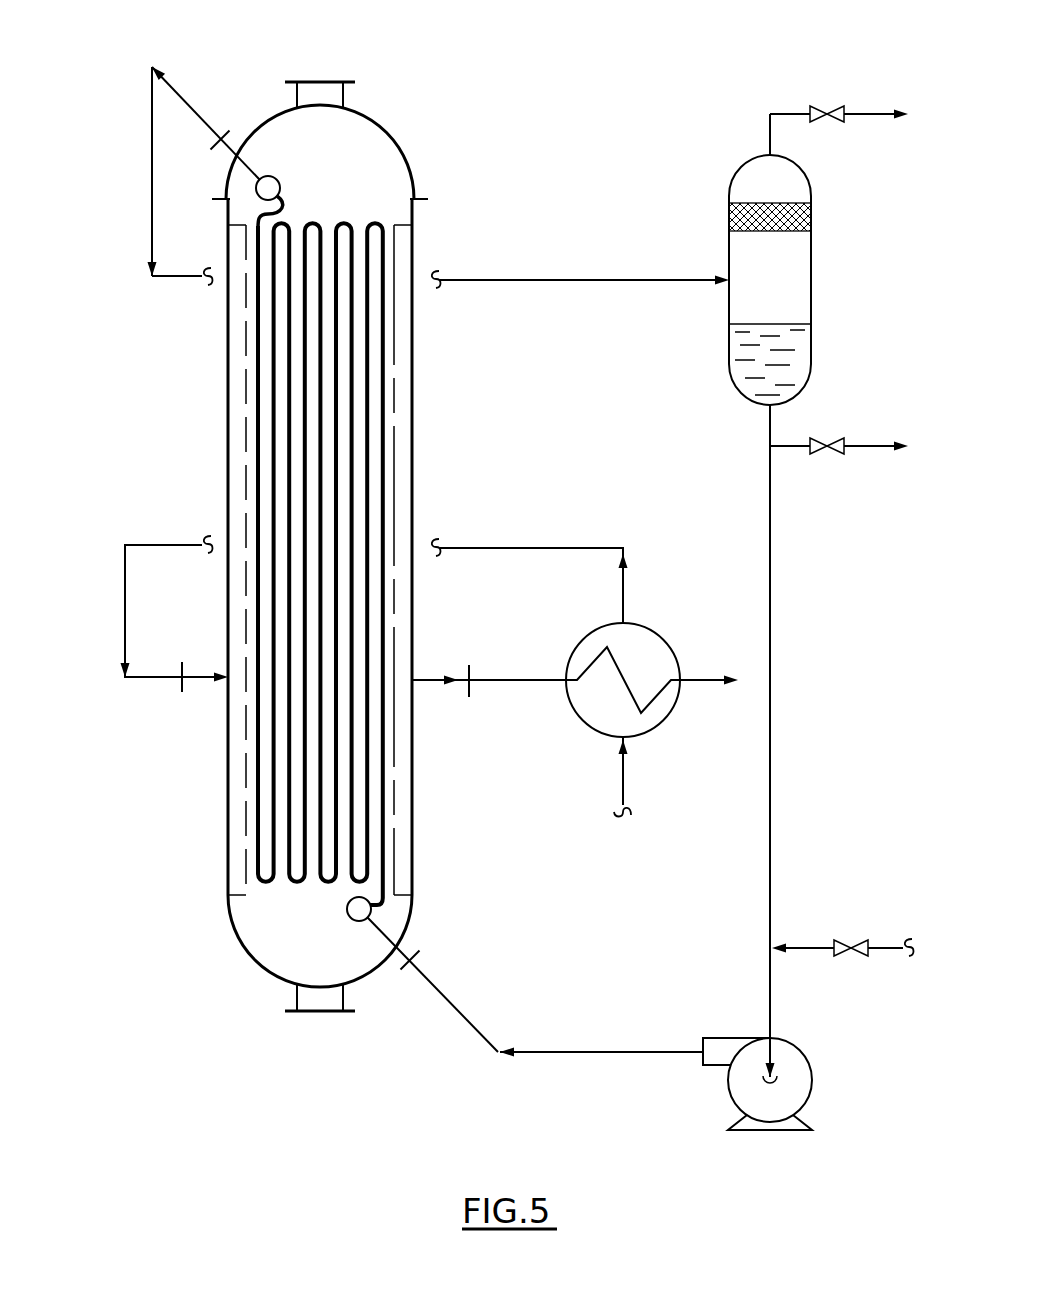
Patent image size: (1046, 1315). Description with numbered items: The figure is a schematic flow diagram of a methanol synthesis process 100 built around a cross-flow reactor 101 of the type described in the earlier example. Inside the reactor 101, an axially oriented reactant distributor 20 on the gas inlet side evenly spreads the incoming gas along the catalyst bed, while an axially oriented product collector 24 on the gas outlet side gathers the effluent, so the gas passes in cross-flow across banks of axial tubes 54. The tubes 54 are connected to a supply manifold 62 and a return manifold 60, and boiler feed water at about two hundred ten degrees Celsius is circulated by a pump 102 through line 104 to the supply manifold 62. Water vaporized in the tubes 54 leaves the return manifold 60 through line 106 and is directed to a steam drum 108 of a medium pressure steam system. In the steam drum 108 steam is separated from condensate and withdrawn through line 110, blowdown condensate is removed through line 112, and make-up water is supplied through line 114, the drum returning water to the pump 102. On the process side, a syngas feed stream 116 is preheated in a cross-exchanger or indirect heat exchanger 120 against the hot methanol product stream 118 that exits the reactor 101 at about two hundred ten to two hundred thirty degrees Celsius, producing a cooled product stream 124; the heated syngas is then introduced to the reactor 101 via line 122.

The methanol synthesis process 100 is at (258, 1100).
The reactor 101 is at (228, 800).
The reactant distributor 20 is at (245, 478).
The product collector 24 is at (397, 476).
The axial tubes 54 is at (389, 387).
The return manifold 60 is at (266, 178).
The supply manifold 62 is at (375, 900).
The pump 102 is at (806, 1060).
The line 104 is at (465, 1015).
The line 106 is at (192, 107).
The steam drum 108 is at (813, 290).
The line 110 is at (790, 110).
The line 112 is at (788, 450).
The line 114 is at (890, 945).
The syngas feed stream 116 is at (625, 790).
The hot methanol product stream 118 is at (560, 678).
The heat exchanger 120 is at (656, 632).
The line 122 is at (530, 546).
The cooled product stream 124 is at (695, 678).